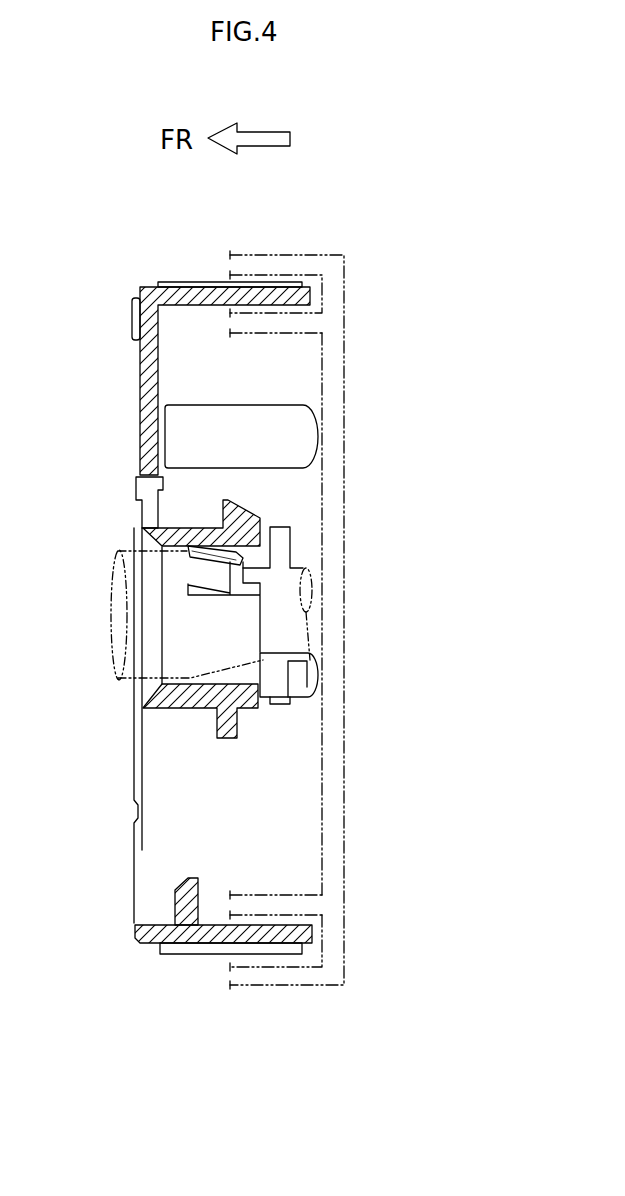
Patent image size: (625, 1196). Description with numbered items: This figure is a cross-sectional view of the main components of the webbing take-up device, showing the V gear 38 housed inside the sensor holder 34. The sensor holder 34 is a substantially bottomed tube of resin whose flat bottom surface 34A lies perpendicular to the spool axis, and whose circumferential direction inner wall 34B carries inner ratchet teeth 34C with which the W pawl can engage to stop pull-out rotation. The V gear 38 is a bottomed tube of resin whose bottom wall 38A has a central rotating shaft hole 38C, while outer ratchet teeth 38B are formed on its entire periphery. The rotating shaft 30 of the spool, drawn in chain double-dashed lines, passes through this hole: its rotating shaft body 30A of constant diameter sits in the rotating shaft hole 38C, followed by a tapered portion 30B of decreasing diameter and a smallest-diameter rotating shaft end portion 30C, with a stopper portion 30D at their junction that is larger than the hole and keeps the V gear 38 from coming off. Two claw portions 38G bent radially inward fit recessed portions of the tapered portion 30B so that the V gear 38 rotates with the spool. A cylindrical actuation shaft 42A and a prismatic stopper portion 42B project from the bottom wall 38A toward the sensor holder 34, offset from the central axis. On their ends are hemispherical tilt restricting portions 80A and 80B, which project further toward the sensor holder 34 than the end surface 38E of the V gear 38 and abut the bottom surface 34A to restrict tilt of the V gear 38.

The rotating shaft 30 is at (255, 566).
The rotating shaft body 30A is at (127, 548).
The tapered portion 30B is at (212, 690).
The rotating shaft end portion 30C is at (313, 563).
The stopper portion 30D is at (280, 527).
The sensor holder 34 is at (345, 257).
The bottom surface 34A is at (322, 814).
The circumferential direction inner wall 34B is at (295, 323).
The ratchet teeth 34C is at (282, 335).
The V gear 38 is at (141, 287).
The bottom wall 38A is at (158, 343).
The ratchet teeth 38B is at (200, 282).
The rotating shaft hole 38C is at (165, 566).
The end surface 38E is at (311, 298).
The claw portion 38G is at (213, 584).
The actuation shaft 42A is at (263, 420).
The stopper portion 42B is at (298, 698).
The tilt restricting portion 80A is at (315, 437).
The tilt restricting portion 80B is at (318, 674).